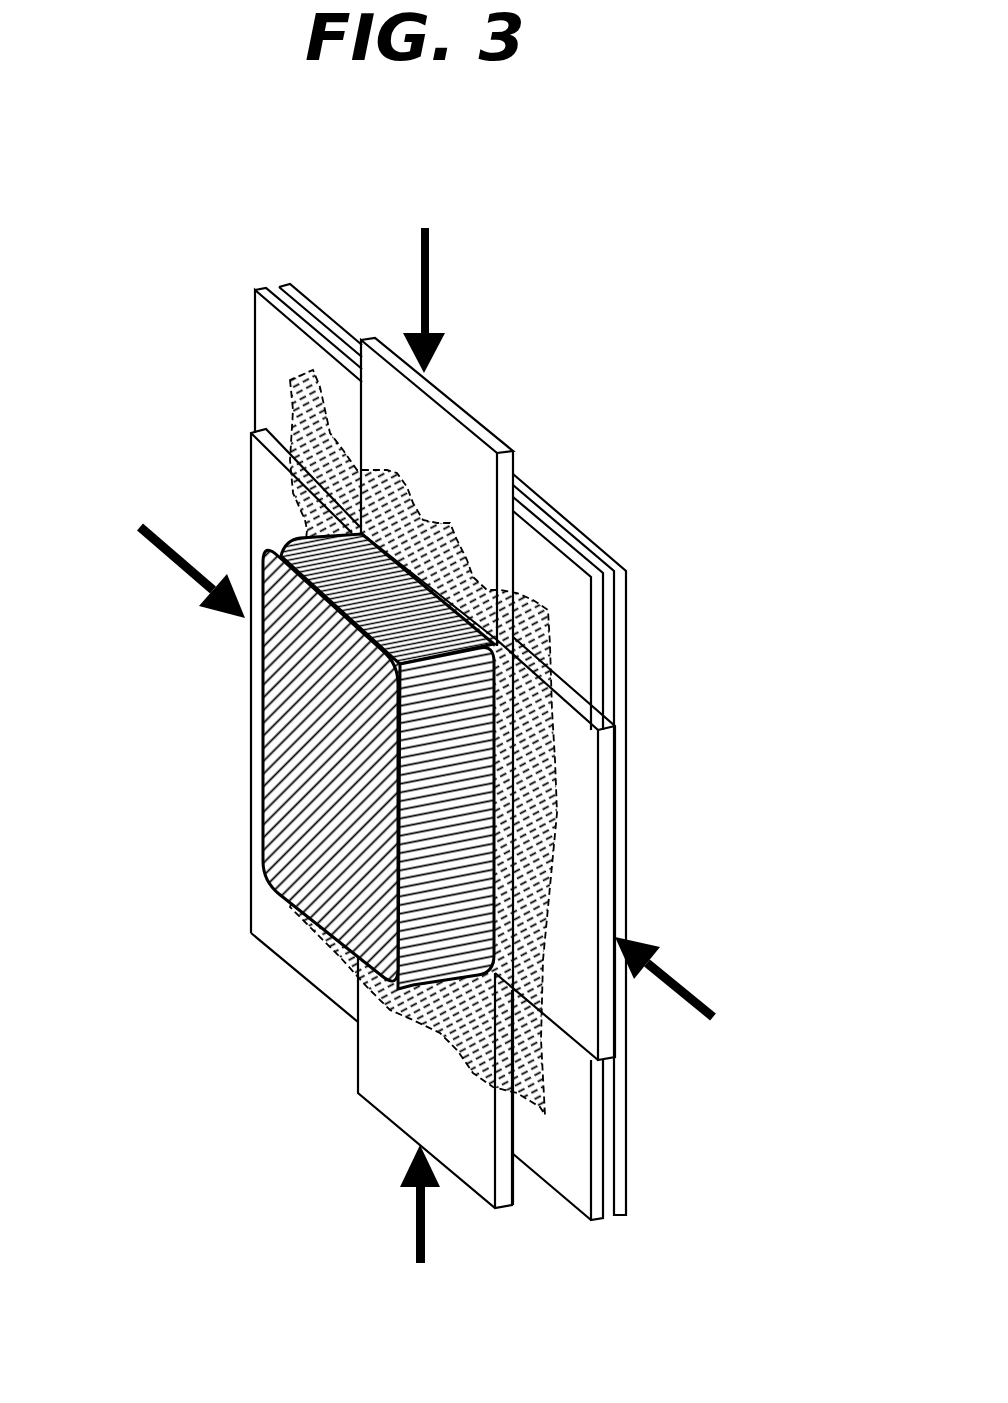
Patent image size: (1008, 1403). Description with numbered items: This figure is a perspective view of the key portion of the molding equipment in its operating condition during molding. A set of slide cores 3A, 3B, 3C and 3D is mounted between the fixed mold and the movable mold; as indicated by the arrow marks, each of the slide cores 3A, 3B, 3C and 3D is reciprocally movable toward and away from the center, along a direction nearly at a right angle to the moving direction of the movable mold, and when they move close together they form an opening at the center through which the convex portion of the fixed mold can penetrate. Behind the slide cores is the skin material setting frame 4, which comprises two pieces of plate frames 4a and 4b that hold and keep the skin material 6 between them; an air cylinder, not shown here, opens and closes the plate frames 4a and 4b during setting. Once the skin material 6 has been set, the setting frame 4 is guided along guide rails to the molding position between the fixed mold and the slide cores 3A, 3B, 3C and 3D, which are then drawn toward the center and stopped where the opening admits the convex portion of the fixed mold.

The slide core 3A is at (463, 453).
The slide core 3B is at (580, 787).
The slide core 3C is at (380, 1072).
The slide core 3D is at (267, 478).
The skin material setting frame 4 is at (522, 826).
The plate frame 4a is at (562, 1172).
The plate frame 4b is at (620, 1172).
The skin material 6 is at (322, 410).